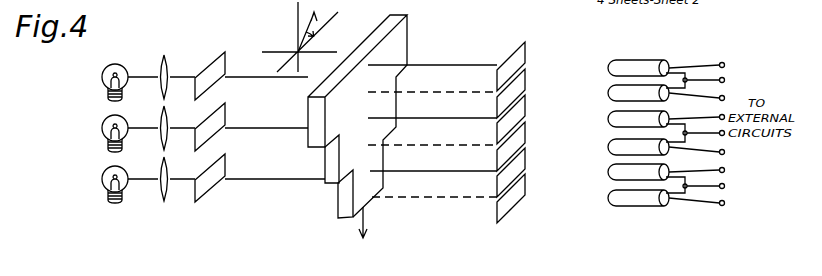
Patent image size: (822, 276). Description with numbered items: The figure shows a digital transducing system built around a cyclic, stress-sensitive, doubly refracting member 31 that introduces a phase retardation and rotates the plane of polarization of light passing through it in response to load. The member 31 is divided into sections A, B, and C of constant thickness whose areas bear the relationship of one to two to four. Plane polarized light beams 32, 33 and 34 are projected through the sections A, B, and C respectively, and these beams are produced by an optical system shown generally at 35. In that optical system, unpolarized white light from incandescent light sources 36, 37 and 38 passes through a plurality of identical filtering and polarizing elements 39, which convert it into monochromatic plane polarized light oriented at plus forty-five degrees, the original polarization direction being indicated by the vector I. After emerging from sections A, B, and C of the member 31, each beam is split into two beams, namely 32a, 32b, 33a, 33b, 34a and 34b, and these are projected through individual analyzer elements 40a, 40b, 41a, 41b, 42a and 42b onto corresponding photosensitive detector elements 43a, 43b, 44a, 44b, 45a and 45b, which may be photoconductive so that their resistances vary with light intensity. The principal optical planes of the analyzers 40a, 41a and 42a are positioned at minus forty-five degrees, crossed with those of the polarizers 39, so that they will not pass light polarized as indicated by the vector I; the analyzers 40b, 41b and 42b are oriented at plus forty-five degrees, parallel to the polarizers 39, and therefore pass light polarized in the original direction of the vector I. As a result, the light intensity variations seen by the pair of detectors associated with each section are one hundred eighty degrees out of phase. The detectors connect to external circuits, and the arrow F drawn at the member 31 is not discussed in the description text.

The doubly refracting member 31 is at (366, 116).
The plane polarized light beam 32 is at (282, 180).
The plane polarized light beam 33 is at (290, 129).
The plane polarized light beam 34 is at (290, 78).
The optical system 35 is at (182, 22).
The incandescent light source 36 is at (102, 179).
The incandescent light source 37 is at (102, 128).
The incandescent light source 38 is at (102, 77).
The filtering and polarizing element 39 is at (210, 63).
The split beam 32a is at (453, 198).
The split beam 32b is at (447, 174).
The split beam 33a is at (453, 146).
The split beam 33b is at (452, 120).
The split beam 34a is at (457, 95).
The split beam 34b is at (462, 68).
The analyzer element 40a is at (526, 180).
The analyzer element 40b is at (526, 154).
The analyzer element 41a is at (526, 128).
The analyzer element 41b is at (526, 101).
The analyzer element 42a is at (526, 75).
The analyzer element 42b is at (526, 48).
The photosensitive detector element 43a is at (652, 205).
The photosensitive detector element 43b is at (618, 178).
The photosensitive detector element 44a is at (655, 154).
The photosensitive detector element 44b is at (618, 124).
The photosensitive detector element 45a is at (654, 101).
The photosensitive detector element 45b is at (618, 72).
The section A is at (338, 202).
The section B is at (325, 161).
The section C is at (407, 33).
The applied force F is at (361, 231).
The vector I is at (304, 37).